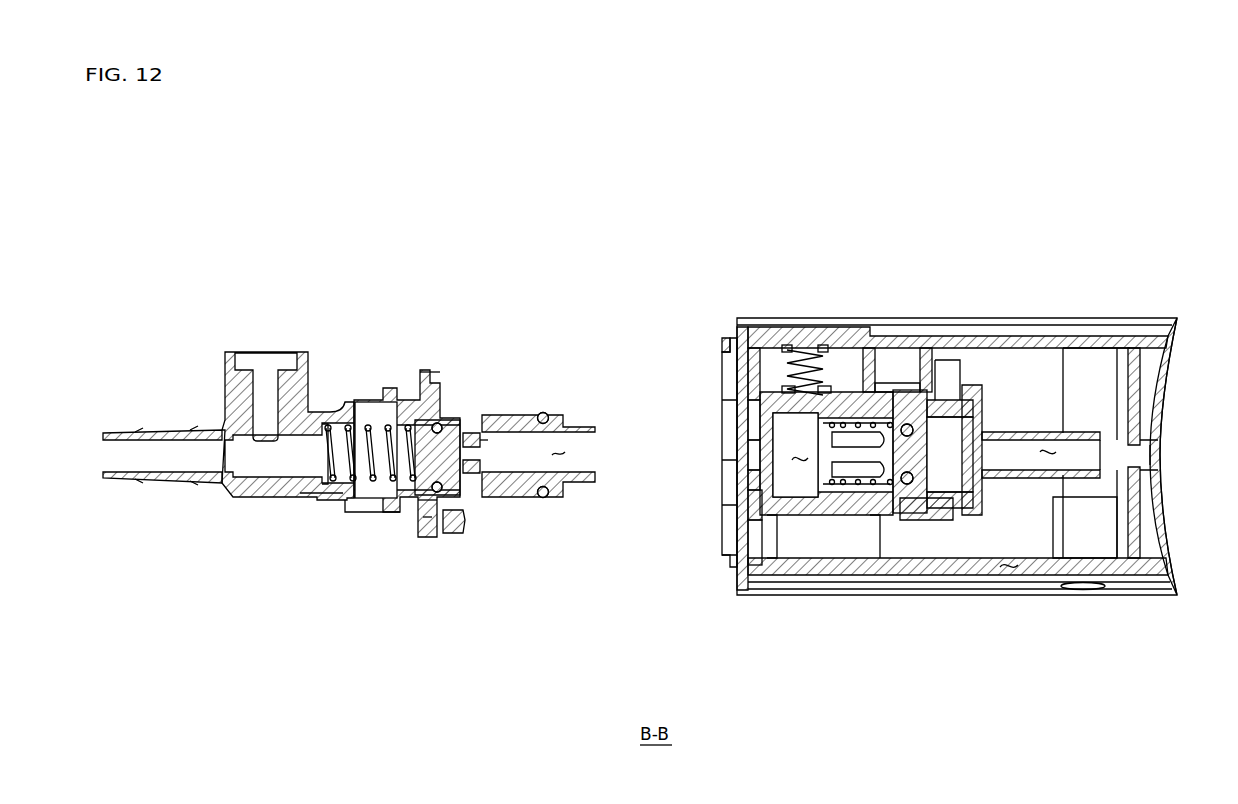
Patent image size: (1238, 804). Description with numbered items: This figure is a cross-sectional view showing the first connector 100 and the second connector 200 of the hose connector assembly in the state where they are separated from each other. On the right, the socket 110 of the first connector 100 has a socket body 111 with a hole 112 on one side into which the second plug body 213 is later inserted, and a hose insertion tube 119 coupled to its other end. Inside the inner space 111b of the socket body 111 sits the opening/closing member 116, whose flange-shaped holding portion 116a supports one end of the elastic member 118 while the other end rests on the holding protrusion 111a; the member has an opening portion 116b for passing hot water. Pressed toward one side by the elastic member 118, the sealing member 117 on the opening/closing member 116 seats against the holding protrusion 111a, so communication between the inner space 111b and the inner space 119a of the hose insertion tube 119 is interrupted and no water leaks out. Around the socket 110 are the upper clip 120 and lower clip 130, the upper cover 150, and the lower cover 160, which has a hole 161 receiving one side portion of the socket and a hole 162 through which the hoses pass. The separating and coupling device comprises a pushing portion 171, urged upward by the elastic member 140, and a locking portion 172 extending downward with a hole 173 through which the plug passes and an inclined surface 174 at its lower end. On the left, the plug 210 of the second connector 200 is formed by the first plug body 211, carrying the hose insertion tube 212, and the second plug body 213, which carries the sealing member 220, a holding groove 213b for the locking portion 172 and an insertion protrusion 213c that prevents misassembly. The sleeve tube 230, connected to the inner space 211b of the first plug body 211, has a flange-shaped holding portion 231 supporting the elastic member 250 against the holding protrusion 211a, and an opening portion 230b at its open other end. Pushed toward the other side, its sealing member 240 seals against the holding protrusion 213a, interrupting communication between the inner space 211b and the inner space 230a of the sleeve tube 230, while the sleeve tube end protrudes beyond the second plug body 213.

The first connector 100 is at (956, 252).
The socket 110 is at (1060, 340).
The socket body 111 is at (799, 465).
The holding protrusion 111a is at (910, 470).
The inner space 111b is at (775, 528).
The hole 112 is at (752, 478).
The opening/closing member 116 is at (900, 330).
The holding portion 116a is at (823, 507).
The opening portion 116b is at (865, 467).
The sealing member 117 is at (947, 330).
The elastic member 118 is at (852, 318).
The hose insertion tube 119 is at (1023, 473).
The inner space 119a is at (1045, 455).
The upper clip 120 is at (945, 395).
The lower clip 130 is at (933, 500).
The elastic member 140 is at (736, 338).
The upper cover 150 is at (1022, 402).
The lower cover 160 is at (1009, 568).
The hole 161 is at (728, 434).
The hole 162 is at (1152, 455).
The pushing portion 171 is at (805, 335).
The locking portion 172 is at (733, 373).
The hole 173 is at (752, 410).
The inclined surface 174 is at (740, 520).
The second connector 200 is at (364, 312).
The plug 210 is at (226, 510).
The first plug body 211 is at (305, 393).
The holding protrusion 211a is at (335, 492).
The inner space 211b is at (370, 498).
The hose insertion tube 212 is at (160, 428).
The second plug body 213 is at (503, 416).
The holding protrusion 213a is at (440, 390).
The holding groove 213b is at (475, 510).
The insertion protrusion 213c is at (432, 515).
The sealing member 220 is at (543, 498).
The sleeve tube 230 is at (580, 485).
The inner space 230a is at (558, 452).
The opening portion 230b is at (478, 440).
The holding portion 231 is at (418, 482).
The sealing member 240 is at (452, 530).
The elastic member 250 is at (382, 482).